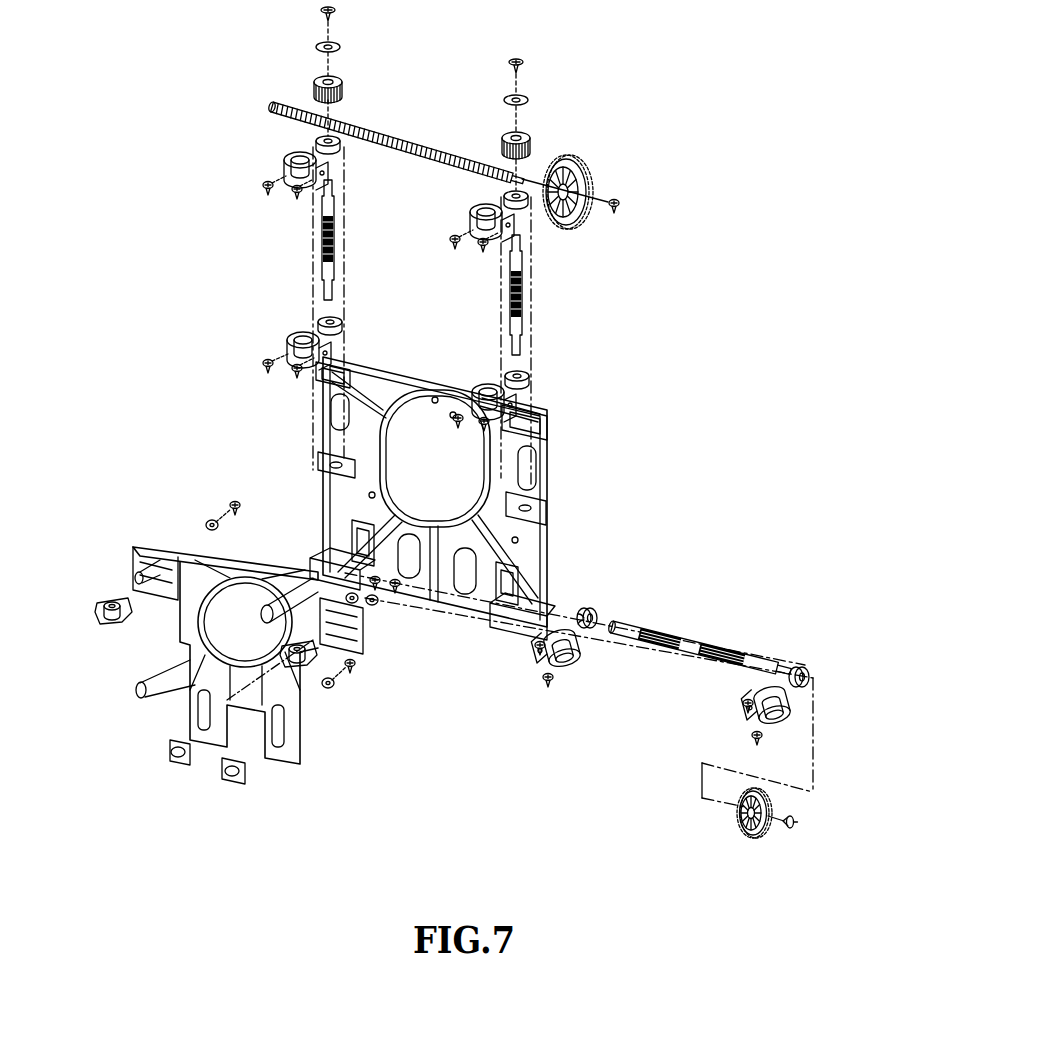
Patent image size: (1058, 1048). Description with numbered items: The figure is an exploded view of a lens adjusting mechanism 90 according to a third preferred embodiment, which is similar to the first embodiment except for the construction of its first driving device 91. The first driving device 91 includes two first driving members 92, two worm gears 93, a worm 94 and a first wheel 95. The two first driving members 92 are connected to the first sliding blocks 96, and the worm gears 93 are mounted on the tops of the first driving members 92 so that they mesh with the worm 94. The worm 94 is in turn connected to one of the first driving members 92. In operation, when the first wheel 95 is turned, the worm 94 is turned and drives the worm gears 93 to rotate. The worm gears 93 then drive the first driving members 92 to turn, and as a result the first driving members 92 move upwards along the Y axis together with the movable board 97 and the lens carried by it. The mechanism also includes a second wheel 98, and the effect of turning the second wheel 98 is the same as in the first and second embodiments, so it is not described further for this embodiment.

The lens adjusting mechanism 90 is at (697, 100).
The first driving device 91 is at (553, 83).
The first driving members 92 is at (325, 208).
The worm gears 93 is at (318, 89).
The worm 94 is at (397, 150).
The first wheel 95 is at (588, 180).
The first sliding blocks 96 is at (107, 635).
The movable board 97 is at (180, 528).
The second wheel 98 is at (740, 836).